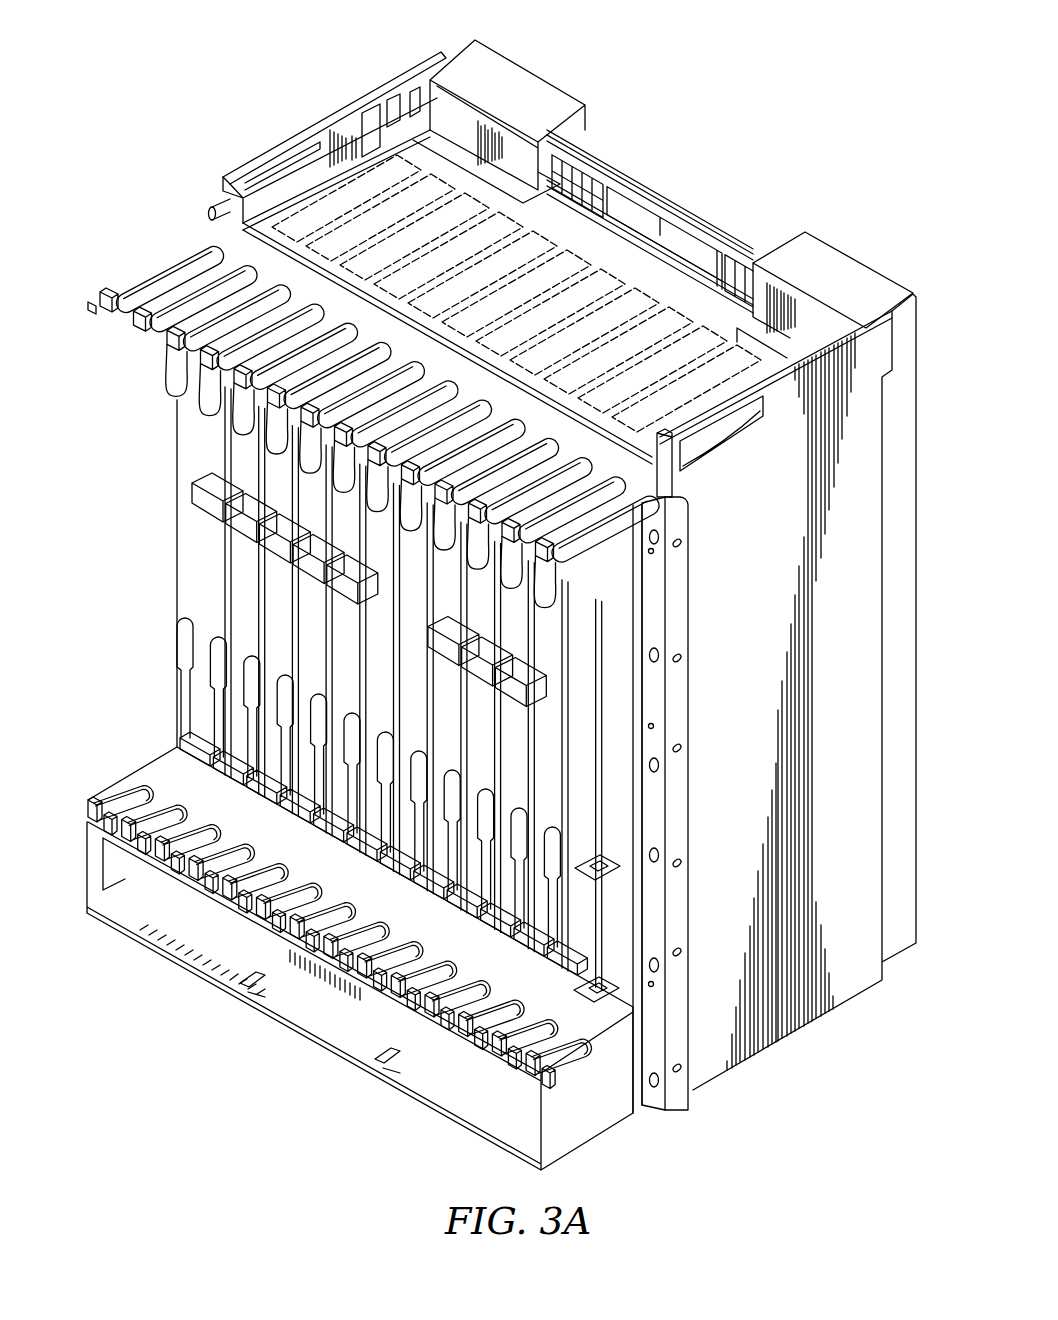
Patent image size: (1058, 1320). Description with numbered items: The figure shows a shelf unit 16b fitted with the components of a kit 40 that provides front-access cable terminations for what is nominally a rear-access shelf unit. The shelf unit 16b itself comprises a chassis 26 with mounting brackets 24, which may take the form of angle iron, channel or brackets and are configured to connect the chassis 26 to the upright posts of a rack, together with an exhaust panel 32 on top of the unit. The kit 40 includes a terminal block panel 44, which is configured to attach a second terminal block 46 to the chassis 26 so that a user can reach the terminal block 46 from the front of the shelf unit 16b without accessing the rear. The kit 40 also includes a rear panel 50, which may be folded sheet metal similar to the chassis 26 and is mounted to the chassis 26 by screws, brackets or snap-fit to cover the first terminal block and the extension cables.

The shelf unit 16b is at (257, 105).
The second terminal block 46 is at (466, 123).
The kit 40 is at (736, 92).
The exhaust panel 32 is at (600, 253).
The terminal block panel 44 is at (697, 208).
The rear panel 50 is at (877, 292).
The chassis 26 is at (768, 553).
The mounting brackets 24 is at (678, 1108).